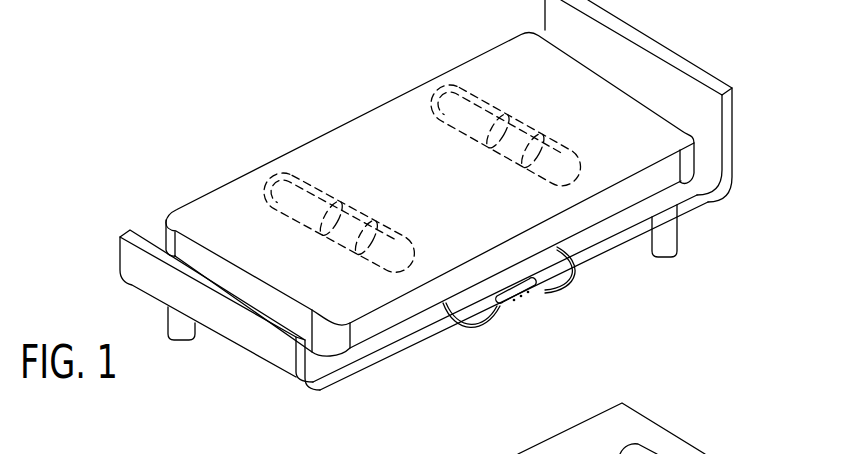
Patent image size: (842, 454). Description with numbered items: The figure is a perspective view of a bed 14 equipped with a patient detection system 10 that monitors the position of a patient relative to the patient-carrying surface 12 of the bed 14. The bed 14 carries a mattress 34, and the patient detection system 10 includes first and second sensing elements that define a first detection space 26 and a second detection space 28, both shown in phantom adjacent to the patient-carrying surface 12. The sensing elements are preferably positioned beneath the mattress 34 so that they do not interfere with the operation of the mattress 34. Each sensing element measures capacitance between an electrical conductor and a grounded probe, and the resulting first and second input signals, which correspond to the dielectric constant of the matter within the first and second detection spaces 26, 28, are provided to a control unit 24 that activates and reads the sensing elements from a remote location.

The patient detection system 10 is at (559, 333).
The patient-carrying surface 12 is at (420, 200).
The bed 14 is at (768, 172).
The control unit 24 is at (516, 304).
The first detection space 26 is at (506, 108).
The second detection space 28 is at (316, 186).
The mattress 34 is at (643, 188).